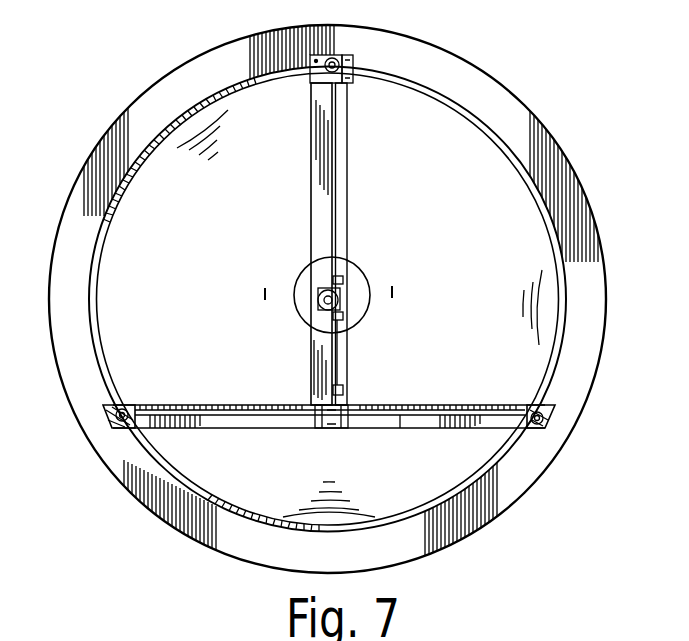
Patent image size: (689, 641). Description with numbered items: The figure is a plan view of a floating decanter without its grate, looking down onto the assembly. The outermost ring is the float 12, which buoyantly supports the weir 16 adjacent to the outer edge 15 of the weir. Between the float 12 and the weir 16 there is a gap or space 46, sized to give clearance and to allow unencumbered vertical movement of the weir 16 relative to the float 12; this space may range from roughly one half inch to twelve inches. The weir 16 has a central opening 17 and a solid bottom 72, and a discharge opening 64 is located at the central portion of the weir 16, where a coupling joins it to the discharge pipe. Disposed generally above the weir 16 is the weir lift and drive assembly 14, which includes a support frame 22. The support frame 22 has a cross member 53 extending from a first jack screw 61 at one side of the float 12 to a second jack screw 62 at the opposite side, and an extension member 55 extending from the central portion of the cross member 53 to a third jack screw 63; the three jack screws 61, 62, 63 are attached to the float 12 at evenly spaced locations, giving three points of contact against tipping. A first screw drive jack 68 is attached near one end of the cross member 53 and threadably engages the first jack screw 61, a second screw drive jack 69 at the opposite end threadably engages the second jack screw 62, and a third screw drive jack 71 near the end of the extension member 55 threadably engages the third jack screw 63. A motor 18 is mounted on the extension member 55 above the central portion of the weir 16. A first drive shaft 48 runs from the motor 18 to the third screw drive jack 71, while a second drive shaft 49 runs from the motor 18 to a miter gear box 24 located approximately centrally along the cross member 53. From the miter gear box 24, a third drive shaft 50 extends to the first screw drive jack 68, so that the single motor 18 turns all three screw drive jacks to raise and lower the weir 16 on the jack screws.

The float 12 is at (148, 118).
The outer edge of weir 15 is at (105, 232).
The space 46 is at (94, 323).
The weir 16 is at (184, 285).
The solid bottom of weir 72 is at (540, 264).
The central opening of weir 17 is at (470, 177).
The weir lift and drive assembly 14 is at (298, 215).
The third jack screw 63 is at (345, 56).
The third screw drive jack 71 is at (355, 80).
The support frame 22 is at (348, 200).
The first drive shaft 48 is at (340, 244).
The motor 18 is at (300, 290).
The extension member 55 is at (340, 243).
The discharge opening 64 is at (355, 302).
The second drive shaft 49 is at (347, 367).
The third drive shaft 50 is at (270, 428).
The miter gear box 24 is at (340, 428).
The cross member 53 is at (412, 428).
The first jack screw 61 is at (125, 427).
The first screw drive jack 68 is at (120, 405).
The second jack screw 62 is at (542, 428).
The second screw drive jack 69 is at (530, 407).